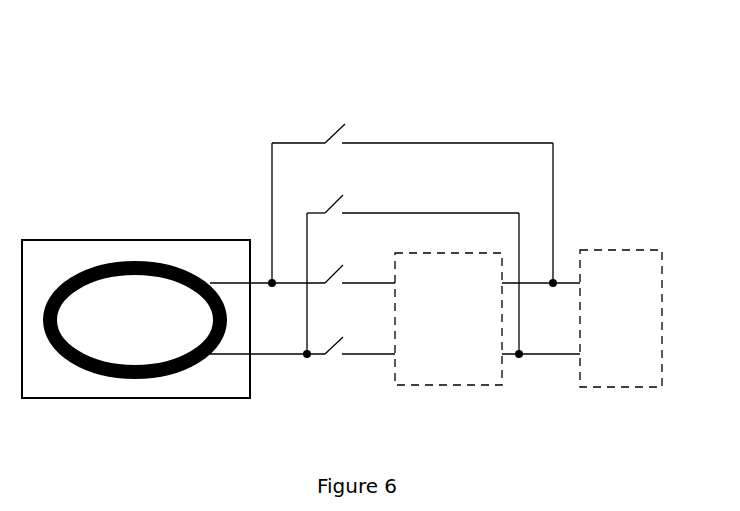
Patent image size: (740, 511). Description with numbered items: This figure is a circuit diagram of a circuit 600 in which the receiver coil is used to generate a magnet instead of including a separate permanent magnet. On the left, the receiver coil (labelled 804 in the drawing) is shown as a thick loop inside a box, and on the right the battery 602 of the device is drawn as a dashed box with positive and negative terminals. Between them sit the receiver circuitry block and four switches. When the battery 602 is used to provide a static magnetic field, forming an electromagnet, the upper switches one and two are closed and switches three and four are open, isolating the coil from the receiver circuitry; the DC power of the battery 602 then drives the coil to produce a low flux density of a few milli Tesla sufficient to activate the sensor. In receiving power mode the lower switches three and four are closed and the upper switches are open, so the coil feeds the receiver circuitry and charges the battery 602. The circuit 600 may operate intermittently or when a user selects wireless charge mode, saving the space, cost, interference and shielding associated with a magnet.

The circuit 600 is at (562, 95).
The receiver coil / antenna 804 is at (105, 250).
The battery 602 is at (590, 240).